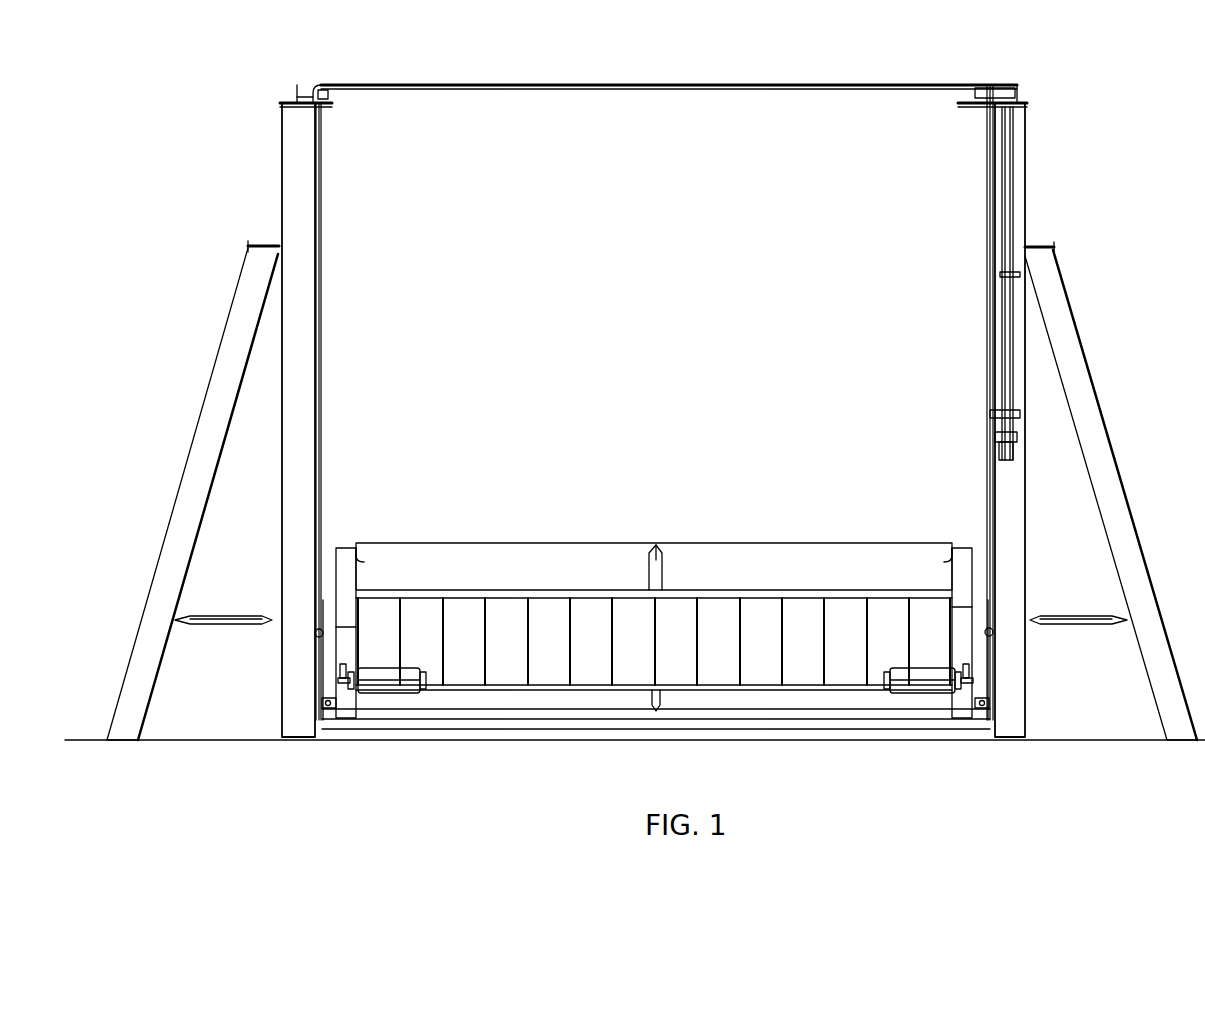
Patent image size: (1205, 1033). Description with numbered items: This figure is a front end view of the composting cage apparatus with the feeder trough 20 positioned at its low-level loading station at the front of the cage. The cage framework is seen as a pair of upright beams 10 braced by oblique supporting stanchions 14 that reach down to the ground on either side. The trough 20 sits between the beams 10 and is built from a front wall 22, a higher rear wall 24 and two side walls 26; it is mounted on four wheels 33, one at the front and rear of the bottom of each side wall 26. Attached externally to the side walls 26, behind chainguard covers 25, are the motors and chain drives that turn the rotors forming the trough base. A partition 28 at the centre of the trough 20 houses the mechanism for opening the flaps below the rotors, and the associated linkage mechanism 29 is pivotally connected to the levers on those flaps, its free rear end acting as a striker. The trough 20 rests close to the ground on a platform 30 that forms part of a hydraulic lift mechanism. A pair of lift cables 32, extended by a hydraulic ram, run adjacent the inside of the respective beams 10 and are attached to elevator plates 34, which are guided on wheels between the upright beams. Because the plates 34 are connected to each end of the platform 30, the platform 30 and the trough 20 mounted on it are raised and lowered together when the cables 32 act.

The upright beam 10 is at (295, 176).
The supporting stanchion 14 is at (208, 425).
The trough 20 is at (808, 522).
The front wall 22 is at (542, 670).
The rear wall 24 is at (495, 565).
The chainguard cover 25 is at (340, 578).
The side wall 26 is at (372, 552).
The partition 28 is at (655, 547).
The linkage mechanism 29 is at (662, 708).
The platform 30 is at (750, 724).
The lift cable 32 is at (697, 85).
The wheel 33 is at (348, 710).
The elevator plate 34 is at (318, 672).